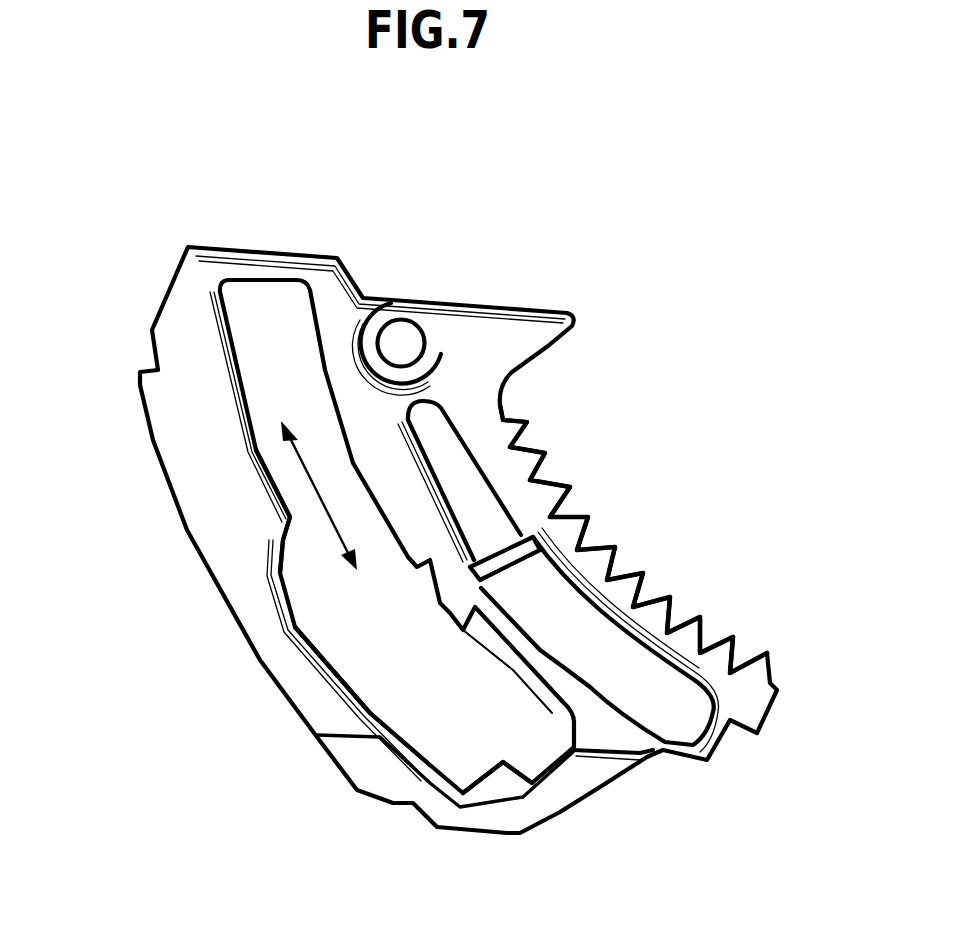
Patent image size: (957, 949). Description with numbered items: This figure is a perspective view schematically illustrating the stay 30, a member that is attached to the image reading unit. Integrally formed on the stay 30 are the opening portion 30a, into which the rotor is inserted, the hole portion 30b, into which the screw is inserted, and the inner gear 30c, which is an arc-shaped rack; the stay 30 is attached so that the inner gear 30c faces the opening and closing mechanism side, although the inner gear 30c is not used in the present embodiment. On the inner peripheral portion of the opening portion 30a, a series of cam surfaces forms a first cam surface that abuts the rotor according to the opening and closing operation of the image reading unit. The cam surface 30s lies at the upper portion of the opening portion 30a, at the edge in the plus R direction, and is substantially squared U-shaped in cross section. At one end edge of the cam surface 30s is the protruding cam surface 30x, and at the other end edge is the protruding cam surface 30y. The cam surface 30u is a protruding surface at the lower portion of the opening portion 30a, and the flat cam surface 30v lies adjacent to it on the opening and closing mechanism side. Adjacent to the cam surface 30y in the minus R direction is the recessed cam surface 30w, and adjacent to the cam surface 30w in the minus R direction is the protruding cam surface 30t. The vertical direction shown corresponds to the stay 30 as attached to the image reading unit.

The stay 30 is at (598, 178).
The opening portion 30a is at (268, 300).
The hole portion 30b is at (407, 338).
The inner gear 30c is at (528, 428).
The cam surface 30s is at (232, 370).
The cam surface 30t is at (475, 627).
The cam surface 30u is at (507, 773).
The cam surface 30v is at (580, 757).
The cam surface 30w is at (432, 570).
The cam surface 30x is at (288, 520).
The cam surface 30y is at (410, 557).